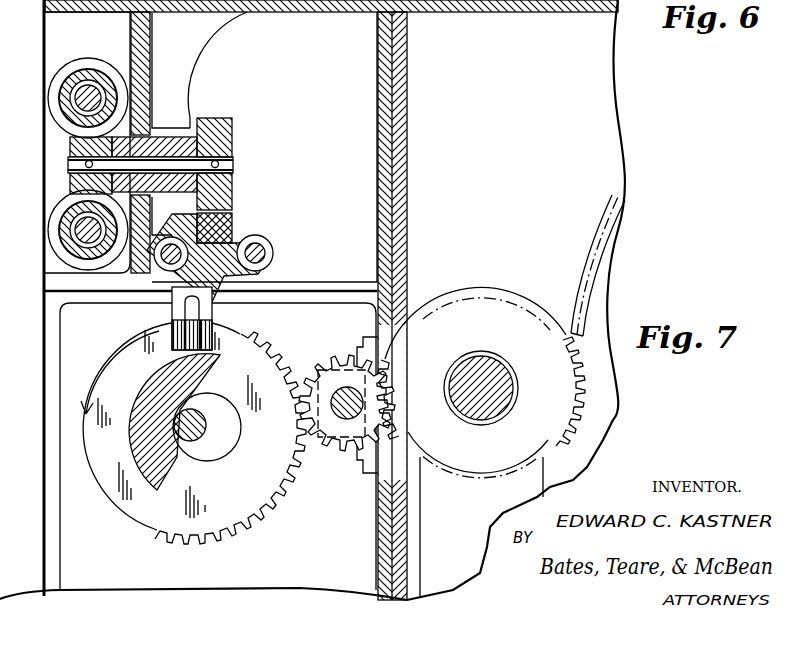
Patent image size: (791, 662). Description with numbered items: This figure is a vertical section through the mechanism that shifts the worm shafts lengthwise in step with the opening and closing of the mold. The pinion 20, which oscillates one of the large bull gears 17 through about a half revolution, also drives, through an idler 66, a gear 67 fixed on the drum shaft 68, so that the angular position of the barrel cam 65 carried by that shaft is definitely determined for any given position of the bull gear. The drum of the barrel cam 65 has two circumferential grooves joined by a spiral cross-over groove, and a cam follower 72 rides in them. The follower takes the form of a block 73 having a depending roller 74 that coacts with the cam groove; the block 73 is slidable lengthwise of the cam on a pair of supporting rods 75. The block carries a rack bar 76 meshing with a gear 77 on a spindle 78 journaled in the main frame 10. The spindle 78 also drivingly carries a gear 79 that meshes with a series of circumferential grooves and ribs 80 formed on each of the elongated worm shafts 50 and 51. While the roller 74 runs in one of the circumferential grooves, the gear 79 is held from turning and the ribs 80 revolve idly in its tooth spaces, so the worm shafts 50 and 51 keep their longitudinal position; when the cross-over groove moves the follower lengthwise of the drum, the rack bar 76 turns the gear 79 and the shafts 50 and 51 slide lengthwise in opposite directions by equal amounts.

The frame 10 is at (410, 87).
The bull gear 17 is at (605, 230).
The pinion 20 is at (488, 290).
The worm shaft 50 is at (97, 97).
The worm shaft 51 is at (85, 238).
The barrel cam 65 is at (137, 520).
The idler 66 is at (337, 447).
The gear 67 is at (277, 507).
The drum shaft 68 is at (205, 432).
The cam follower 72 is at (275, 245).
The block 73 is at (215, 282).
The roller 74 is at (172, 327).
The supporting rod 75 is at (273, 259).
The rack bar 76 is at (232, 226).
The gear 77 is at (228, 131).
The spindle 78 is at (228, 163).
The gear 79 is at (70, 181).
The circumferential grooves and ribs 80 is at (58, 118).